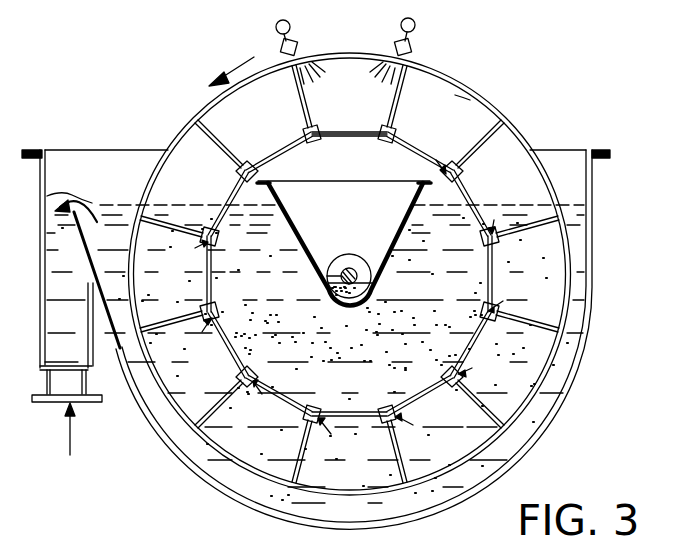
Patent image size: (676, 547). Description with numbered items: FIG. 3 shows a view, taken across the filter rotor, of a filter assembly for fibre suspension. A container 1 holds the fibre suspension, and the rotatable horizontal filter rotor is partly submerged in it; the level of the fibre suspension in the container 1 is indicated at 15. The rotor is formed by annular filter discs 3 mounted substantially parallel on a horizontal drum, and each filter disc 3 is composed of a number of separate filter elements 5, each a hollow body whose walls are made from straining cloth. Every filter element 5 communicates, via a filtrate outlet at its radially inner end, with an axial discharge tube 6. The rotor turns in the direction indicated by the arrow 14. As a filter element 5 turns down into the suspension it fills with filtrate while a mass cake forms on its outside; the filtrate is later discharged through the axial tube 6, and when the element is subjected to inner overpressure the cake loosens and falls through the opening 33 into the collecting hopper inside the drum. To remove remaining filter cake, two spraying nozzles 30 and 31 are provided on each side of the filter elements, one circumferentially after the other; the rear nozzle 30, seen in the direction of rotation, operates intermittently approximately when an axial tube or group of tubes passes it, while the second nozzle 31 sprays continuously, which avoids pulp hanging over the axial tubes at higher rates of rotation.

The container 1 is at (222, 494).
The annular filter disc 3 is at (453, 78).
The filter element 5 is at (455, 95).
The axial discharge tube 6 is at (377, 142).
The arrow 14 is at (254, 57).
The level of the fibre suspension 15 is at (509, 208).
The spraying nozzle 30 is at (415, 25).
The spraying nozzle 31 is at (275, 27).
The opening 33 is at (339, 108).